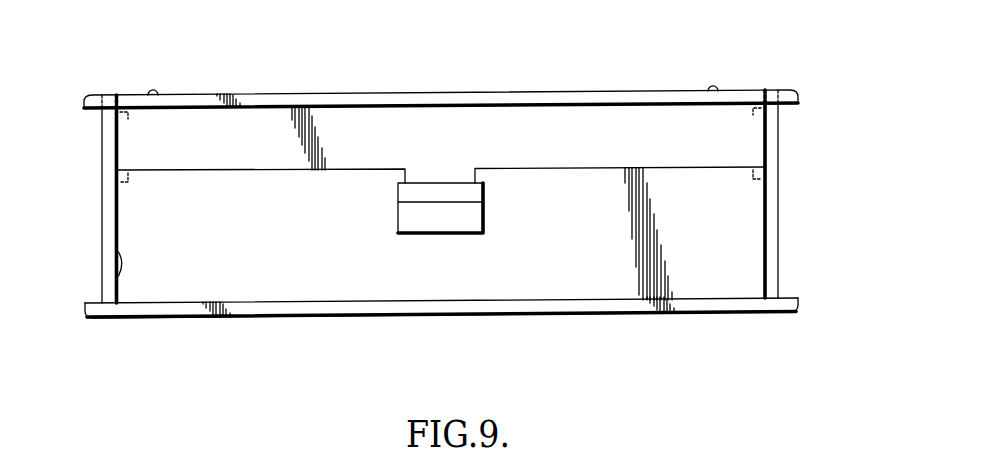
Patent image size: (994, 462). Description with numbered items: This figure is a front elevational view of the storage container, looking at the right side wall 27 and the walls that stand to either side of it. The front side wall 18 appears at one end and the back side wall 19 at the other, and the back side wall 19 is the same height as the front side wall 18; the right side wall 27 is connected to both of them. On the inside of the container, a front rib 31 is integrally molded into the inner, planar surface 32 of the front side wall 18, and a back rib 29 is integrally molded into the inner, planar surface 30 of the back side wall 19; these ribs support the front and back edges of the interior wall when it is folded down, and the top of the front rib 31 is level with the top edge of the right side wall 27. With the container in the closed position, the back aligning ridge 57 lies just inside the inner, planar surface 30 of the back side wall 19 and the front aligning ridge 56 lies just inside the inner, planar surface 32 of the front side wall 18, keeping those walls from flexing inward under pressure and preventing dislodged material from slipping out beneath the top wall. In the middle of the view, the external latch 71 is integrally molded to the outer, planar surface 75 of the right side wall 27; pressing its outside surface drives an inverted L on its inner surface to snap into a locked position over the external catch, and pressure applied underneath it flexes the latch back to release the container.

The front side wall 18 is at (110, 162).
The back side wall 19 is at (772, 240).
The right side wall 27 is at (618, 283).
The back rib 29 is at (760, 176).
The inner, planar surface 30 is at (765, 273).
The front rib 31 is at (119, 187).
The inner, planar surface 32 is at (115, 277).
The front aligning ridge 56 is at (111, 117).
The back aligning ridge 57 is at (752, 103).
The external latch 71 is at (437, 216).
The outer, planar surface 75 is at (582, 251).